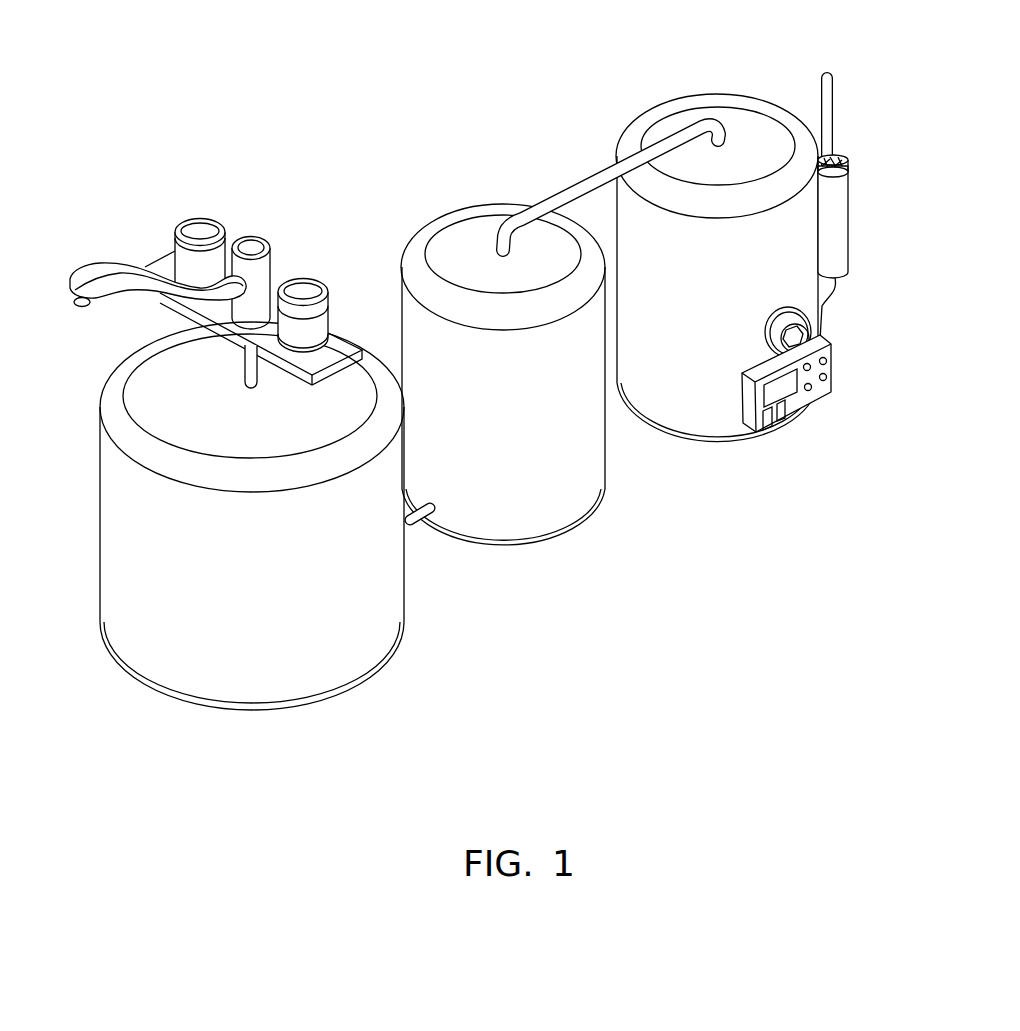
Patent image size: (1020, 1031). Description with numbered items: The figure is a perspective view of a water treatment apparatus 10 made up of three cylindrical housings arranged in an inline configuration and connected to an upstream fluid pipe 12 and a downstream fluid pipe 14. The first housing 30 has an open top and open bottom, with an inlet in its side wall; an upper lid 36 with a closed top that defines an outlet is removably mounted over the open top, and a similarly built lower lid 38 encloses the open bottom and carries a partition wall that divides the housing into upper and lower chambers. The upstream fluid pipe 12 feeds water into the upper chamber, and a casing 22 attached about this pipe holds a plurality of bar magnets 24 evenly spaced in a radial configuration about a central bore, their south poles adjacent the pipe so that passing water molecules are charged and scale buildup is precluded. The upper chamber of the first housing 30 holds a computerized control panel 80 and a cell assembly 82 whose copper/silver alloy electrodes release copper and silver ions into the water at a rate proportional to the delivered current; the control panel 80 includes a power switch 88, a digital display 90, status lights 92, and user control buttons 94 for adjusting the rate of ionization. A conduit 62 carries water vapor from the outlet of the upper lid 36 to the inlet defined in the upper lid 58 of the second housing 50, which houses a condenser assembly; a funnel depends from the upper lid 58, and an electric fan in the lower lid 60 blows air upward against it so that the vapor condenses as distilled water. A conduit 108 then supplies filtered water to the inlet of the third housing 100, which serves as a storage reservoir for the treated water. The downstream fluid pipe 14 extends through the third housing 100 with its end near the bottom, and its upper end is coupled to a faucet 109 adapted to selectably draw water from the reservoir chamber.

The water treatment apparatus 10 is at (315, 83).
The third housing 100 is at (85, 412).
The faucet 109 is at (262, 240).
The downstream fluid pipe 14 is at (243, 363).
The first housing 30 is at (702, 253).
The upper lid 36 is at (647, 110).
The lower lid 38 is at (683, 440).
The second housing 50 is at (497, 367).
The upper lid 58 is at (427, 225).
The lower lid 60 is at (545, 550).
The conduit 108 is at (413, 523).
The conduit 62 is at (610, 168).
The upstream fluid pipe 12 is at (822, 85).
The casing 22 is at (848, 217).
The bar magnets 24 is at (838, 155).
The cell assembly 82 is at (777, 335).
The computerized control panel 80 is at (827, 421).
The digital display 90 is at (787, 388).
The power switch 88 is at (767, 423).
The user control buttons 94 is at (782, 425).
The status lights 92 is at (812, 387).